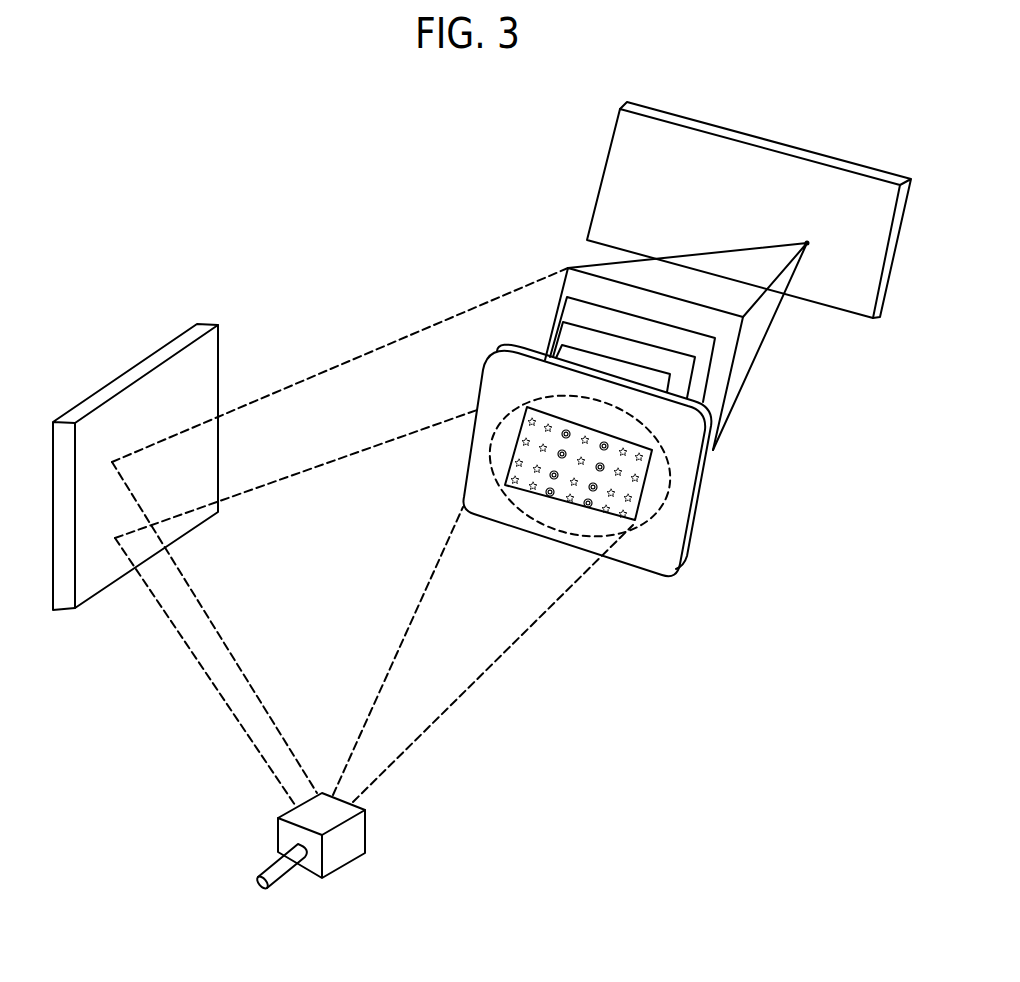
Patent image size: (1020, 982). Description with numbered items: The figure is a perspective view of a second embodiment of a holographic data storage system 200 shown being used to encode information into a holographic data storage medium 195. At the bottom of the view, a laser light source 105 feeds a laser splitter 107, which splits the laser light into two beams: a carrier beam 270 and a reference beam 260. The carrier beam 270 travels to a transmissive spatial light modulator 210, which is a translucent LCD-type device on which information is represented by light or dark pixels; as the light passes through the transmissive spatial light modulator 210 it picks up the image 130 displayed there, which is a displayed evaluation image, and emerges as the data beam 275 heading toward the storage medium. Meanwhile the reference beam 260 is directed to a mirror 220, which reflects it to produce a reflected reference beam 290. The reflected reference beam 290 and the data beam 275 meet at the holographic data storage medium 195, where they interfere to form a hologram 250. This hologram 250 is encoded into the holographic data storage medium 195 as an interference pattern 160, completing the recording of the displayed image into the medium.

The laser light source 105 is at (290, 860).
The laser splitter 107 is at (352, 835).
The image 130 is at (637, 457).
The interference pattern 160 is at (808, 243).
The holographic data storage medium 195 is at (889, 178).
The holographic data storage system 200 is at (560, 744).
The transmissive spatial light modulator 210 is at (692, 531).
The mirror 220 is at (220, 342).
The hologram 250 is at (808, 242).
The reference beam 260 is at (227, 671).
The carrier beam 270 is at (493, 645).
The data beam 275 is at (760, 336).
The reflected reference beam 290 is at (343, 383).